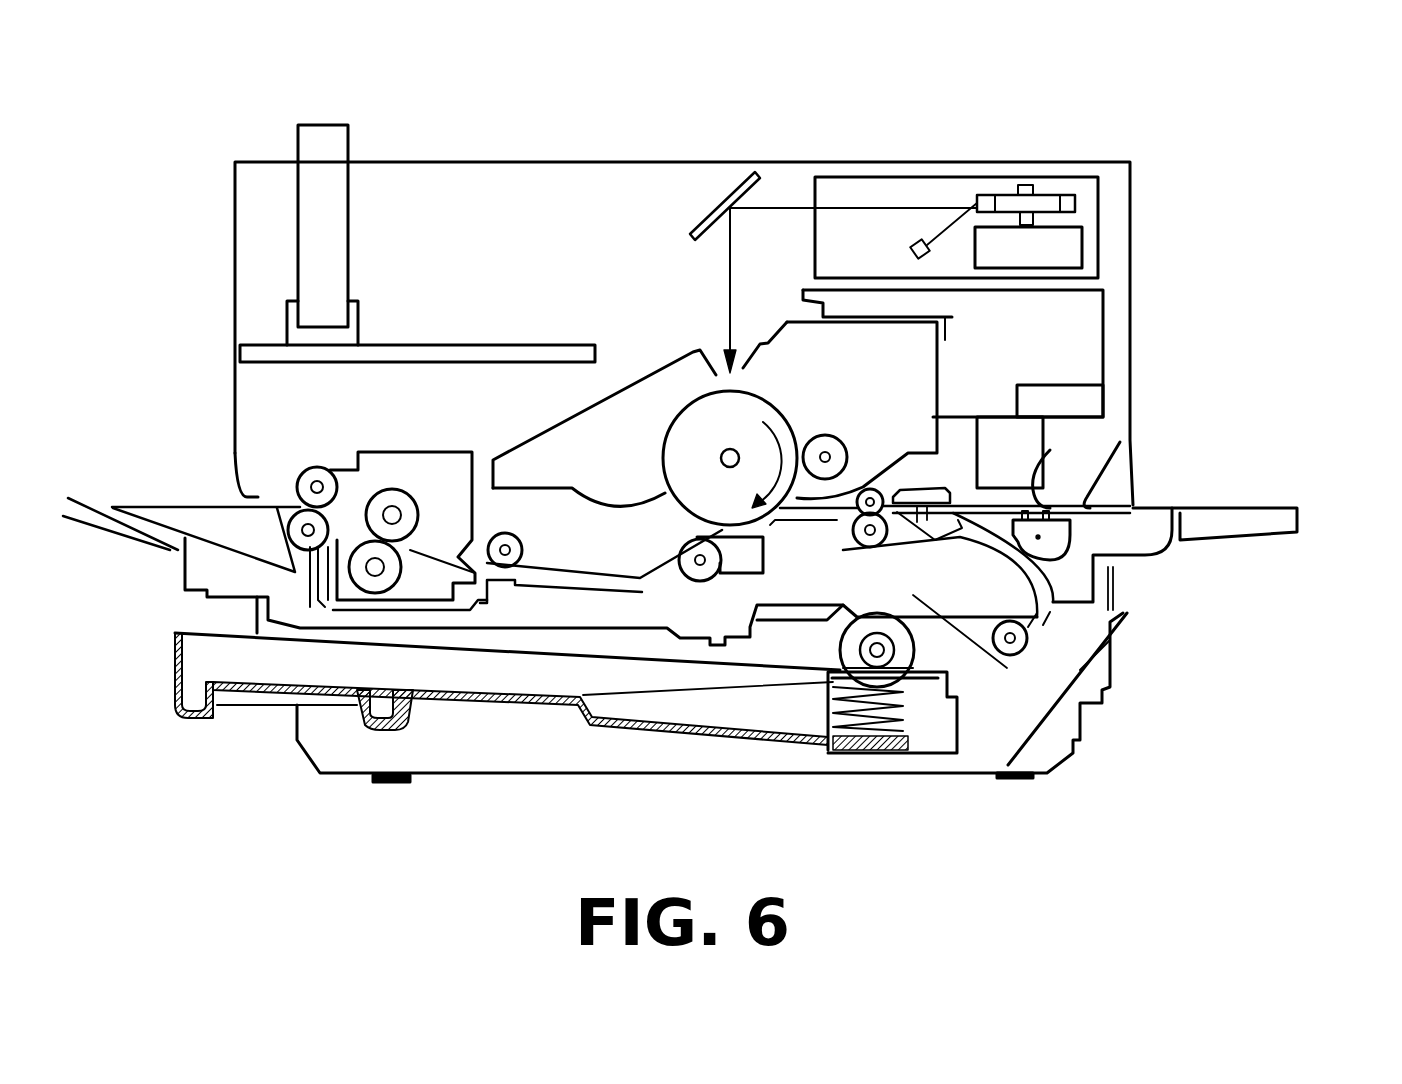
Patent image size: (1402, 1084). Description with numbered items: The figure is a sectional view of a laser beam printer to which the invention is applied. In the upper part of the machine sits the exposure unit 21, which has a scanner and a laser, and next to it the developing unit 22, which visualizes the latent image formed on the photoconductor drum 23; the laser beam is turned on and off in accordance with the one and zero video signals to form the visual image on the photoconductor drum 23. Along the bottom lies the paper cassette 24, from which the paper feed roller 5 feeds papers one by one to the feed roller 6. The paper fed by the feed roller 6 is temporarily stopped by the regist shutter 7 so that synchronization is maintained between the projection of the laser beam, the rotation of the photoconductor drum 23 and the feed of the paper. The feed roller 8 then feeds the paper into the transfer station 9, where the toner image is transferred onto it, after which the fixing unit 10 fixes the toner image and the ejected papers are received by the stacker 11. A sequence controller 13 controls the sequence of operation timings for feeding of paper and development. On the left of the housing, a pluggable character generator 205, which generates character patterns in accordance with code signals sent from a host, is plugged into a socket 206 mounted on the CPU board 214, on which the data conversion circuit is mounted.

The pluggable character generator 205 is at (350, 137).
The socket 206 is at (358, 313).
The CPU board 214 is at (490, 345).
The exposure unit 21 is at (1103, 233).
The developing unit 22 is at (907, 377).
The sequence controller 13 is at (1070, 407).
The photoconductor drum 23 is at (687, 405).
The fixing unit 10 is at (413, 463).
The stacker 11 is at (133, 510).
The paper cassette 24 is at (173, 660).
The transfer station 9 is at (738, 565).
The feed roller 8 is at (857, 528).
The paper feed roller 5 is at (860, 650).
The regist shutter 7 is at (910, 495).
The feed roller 6 is at (1008, 655).